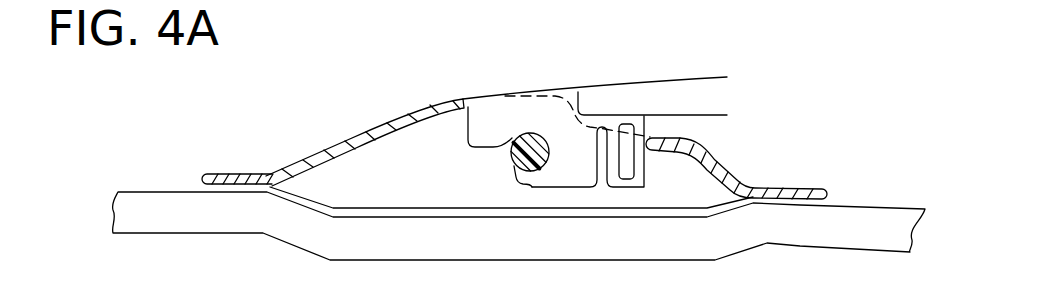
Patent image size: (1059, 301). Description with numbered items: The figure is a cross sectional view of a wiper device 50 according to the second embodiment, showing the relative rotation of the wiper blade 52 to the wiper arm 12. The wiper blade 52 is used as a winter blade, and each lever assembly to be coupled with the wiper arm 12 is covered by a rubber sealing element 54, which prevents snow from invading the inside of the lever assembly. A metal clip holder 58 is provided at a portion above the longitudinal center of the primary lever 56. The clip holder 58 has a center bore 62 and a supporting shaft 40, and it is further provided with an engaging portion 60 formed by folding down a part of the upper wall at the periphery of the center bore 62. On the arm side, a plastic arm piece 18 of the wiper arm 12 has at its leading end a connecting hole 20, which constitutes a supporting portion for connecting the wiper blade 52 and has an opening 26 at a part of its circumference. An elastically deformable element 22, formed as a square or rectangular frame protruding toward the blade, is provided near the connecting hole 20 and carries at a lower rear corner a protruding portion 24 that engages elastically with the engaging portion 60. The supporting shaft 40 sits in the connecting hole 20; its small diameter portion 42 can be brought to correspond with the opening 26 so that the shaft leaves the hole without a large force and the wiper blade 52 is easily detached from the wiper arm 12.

The wiper arm 12 is at (595, 64).
The arm piece 18 is at (670, 82).
The connecting hole 20 is at (531, 132).
The elastically deformable element 22 is at (615, 189).
The protruding portion 24 is at (648, 189).
The opening 26 is at (510, 146).
The supporting shaft 40 is at (533, 173).
The small diameter portion 42 is at (512, 160).
The wiper device 50 is at (357, 97).
The wiper blade 52 is at (519, 184).
The rubber sealing element 54 is at (298, 178).
The primary lever 56 is at (167, 198).
The clip holder 58 is at (344, 138).
The engaging portion 60 is at (654, 152).
The center bore 62 is at (469, 99).